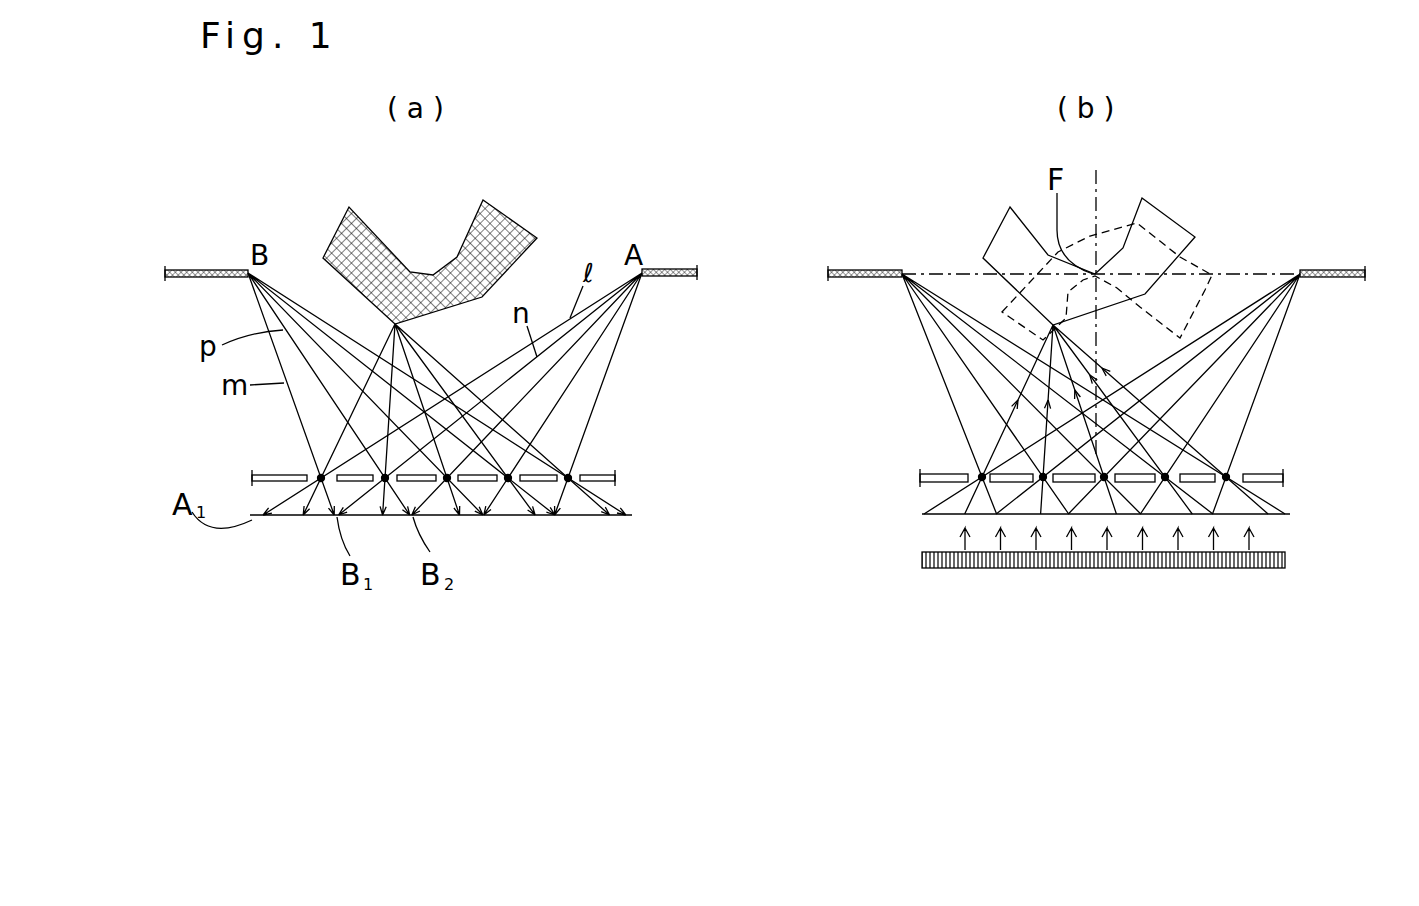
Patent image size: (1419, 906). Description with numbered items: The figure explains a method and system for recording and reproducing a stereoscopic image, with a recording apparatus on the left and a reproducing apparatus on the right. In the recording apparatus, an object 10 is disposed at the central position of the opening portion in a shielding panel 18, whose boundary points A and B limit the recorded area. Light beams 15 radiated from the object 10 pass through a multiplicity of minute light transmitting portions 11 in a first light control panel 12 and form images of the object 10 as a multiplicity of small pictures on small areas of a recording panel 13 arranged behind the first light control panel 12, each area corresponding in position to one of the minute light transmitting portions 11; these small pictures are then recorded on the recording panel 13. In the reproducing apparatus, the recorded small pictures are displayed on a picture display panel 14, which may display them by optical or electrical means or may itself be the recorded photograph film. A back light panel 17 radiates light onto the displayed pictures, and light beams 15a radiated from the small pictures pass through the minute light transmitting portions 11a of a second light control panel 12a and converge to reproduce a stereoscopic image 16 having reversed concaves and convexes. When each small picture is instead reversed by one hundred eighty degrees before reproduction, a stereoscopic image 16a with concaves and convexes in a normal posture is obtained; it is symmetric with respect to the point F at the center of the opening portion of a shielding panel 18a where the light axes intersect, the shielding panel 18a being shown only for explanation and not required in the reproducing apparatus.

The object 10 is at (495, 235).
The minute light transmitting portions 11 is at (570, 475).
The first light control panel 12 is at (283, 478).
The recording panel 13 is at (292, 517).
The picture display panel 14 is at (1262, 516).
The light beams 15 is at (410, 351).
The light beams 15a is at (1217, 393).
The stereoscopic image 16 is at (1168, 223).
The stereoscopic image 16a is at (1208, 273).
The back light panel 17 is at (960, 555).
The shielding panel 18 is at (665, 268).
The shielding panel 18a is at (1330, 268).
The minute light transmitting portions 11a is at (1043, 473).
The second light control panel 12a is at (1265, 478).